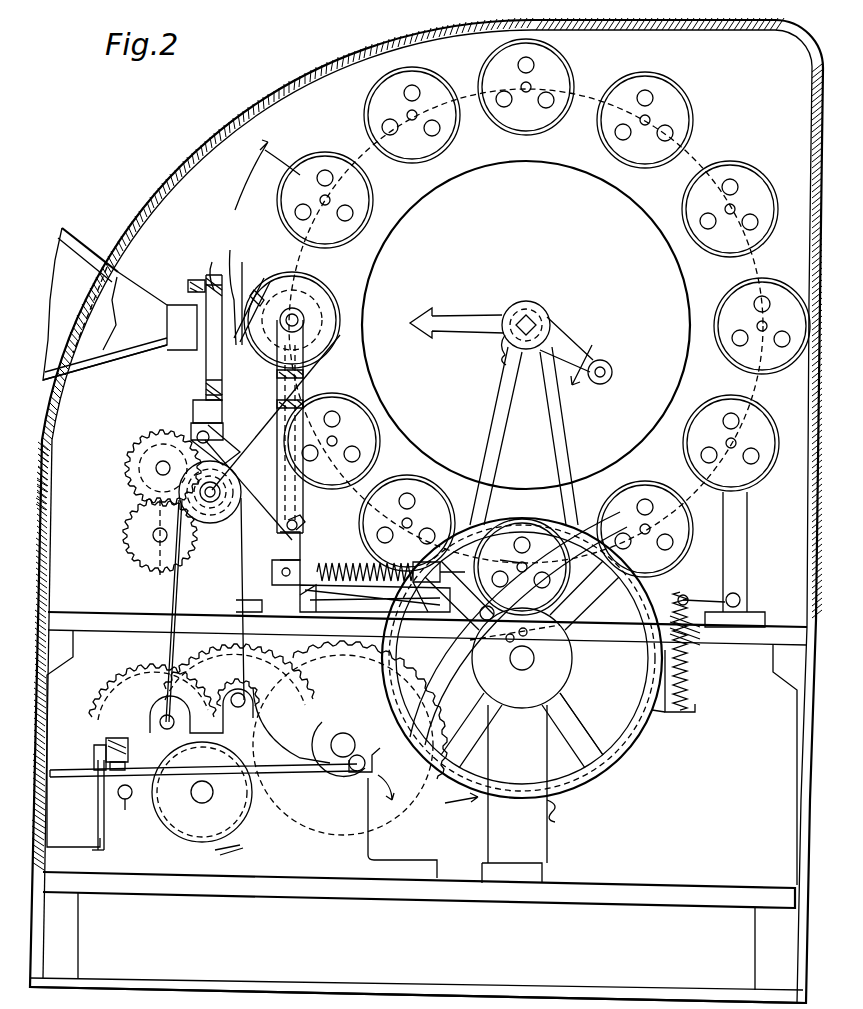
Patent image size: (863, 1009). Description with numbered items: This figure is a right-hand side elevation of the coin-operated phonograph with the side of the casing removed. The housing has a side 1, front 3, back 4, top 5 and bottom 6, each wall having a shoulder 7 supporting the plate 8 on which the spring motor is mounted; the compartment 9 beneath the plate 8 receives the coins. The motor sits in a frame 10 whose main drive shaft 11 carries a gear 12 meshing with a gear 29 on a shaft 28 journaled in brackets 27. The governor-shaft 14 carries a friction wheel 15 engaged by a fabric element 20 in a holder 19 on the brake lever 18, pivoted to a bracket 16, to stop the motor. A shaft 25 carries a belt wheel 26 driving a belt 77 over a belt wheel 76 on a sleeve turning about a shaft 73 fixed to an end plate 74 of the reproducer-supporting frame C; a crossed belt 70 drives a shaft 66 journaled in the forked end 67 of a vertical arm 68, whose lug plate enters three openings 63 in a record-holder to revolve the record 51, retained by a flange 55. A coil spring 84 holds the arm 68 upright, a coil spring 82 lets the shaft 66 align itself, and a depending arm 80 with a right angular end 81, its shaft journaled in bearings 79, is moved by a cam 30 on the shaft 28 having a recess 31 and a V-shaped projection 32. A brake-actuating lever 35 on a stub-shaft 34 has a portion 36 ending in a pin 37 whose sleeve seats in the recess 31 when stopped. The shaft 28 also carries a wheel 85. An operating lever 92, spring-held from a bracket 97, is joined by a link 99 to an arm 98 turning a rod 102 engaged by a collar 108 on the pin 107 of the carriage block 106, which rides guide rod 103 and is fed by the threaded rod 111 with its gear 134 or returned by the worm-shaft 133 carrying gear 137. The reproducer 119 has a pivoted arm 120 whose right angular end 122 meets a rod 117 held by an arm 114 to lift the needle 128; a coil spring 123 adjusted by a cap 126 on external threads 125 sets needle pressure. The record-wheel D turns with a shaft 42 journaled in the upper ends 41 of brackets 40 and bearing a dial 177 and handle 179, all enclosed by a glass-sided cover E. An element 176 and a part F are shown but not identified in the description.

The side 1 is at (426, 510).
The front 3 is at (78, 686).
The back 4 is at (777, 765).
The top 5 is at (340, 638).
The bottom 6 is at (417, 990).
The shoulder 7 is at (62, 893).
The plate 8 is at (382, 890).
The compartment 9 is at (416, 963).
The frame 10 is at (249, 842).
The main drive shaft 11 is at (341, 740).
The gear 12 is at (387, 792).
The governor-shaft 14 is at (124, 804).
The friction wheel 15 is at (98, 795).
The standard or bracket 16 is at (92, 822).
The brake lever 18 is at (94, 758).
The holder 19 is at (106, 750).
The fabric element 20 is at (118, 736).
The shaft 25 is at (195, 798).
The belt wheel 26 is at (202, 792).
The brackets or standards 27 is at (556, 820).
The shaft 28 is at (530, 662).
The gear 29 is at (608, 765).
The cam 30 is at (522, 658).
The recess or cut-away portion 31 is at (515, 629).
The V-shaped projection 32 is at (534, 655).
The stub-shaft 34 is at (345, 778).
The brake-actuating lever 35 is at (273, 778).
The upwardly and rearwardly extending portion 36 is at (435, 650).
The pin 37 is at (515, 633).
The supports or brackets 40 is at (550, 413).
The upper ends 41 is at (503, 358).
The shaft 42 is at (538, 318).
The record 51 is at (478, 70).
The flange 55 is at (300, 280).
The openings 63 is at (543, 343).
The shaft 66 is at (318, 340).
The forked end 67 is at (292, 320).
The arm 68 is at (233, 498).
The crossed belt 70 is at (276, 412).
The shaft 73 is at (248, 490).
The end plates 74 is at (240, 570).
The belt wheel 76 is at (212, 524).
The belt 77 is at (190, 593).
The bearings or brackets 79 is at (452, 612).
The depending arm 80 is at (503, 553).
The right angular end 81 is at (470, 640).
The coil spring 82 is at (355, 560).
The coil spring 84 is at (300, 520).
The wheel 85 is at (580, 680).
The operating lever 92 is at (375, 597).
The bracket 97 is at (658, 715).
The arm 98 is at (280, 538).
The link 99 is at (275, 560).
The rod 102 is at (748, 548).
The guide rod 103 is at (163, 466).
The carriage block 106 is at (695, 598).
The pin 107 is at (692, 672).
The collar 108 is at (690, 713).
The threaded rod 111 is at (164, 475).
The arm 114 is at (192, 425).
The rod 117 is at (194, 405).
The reproducer 119 is at (205, 340).
The arm 120 is at (254, 296).
The right angular end 122 is at (205, 390).
The coil spring 123 is at (238, 291).
The external threads 125 is at (199, 265).
The cap 126 is at (178, 278).
The needle 128 is at (260, 302).
The worm-shaft 133 is at (160, 535).
The gear 134 is at (128, 465).
The gear 137 is at (135, 520).
The pointer 176 is at (450, 325).
The dial 177 is at (526, 325).
The handle 179 is at (586, 378).
The reproducer-supporting frame C is at (150, 598).
The record-wheel D is at (788, 245).
The cover E is at (790, 36).
The hopper F is at (120, 304).